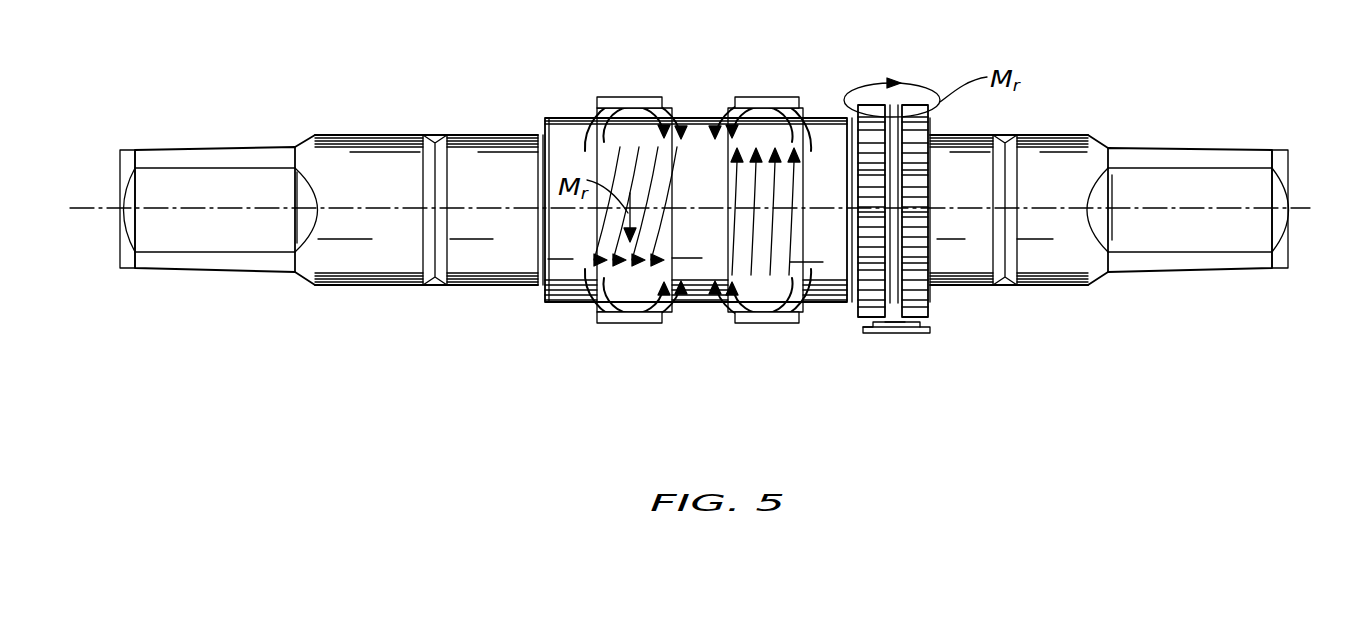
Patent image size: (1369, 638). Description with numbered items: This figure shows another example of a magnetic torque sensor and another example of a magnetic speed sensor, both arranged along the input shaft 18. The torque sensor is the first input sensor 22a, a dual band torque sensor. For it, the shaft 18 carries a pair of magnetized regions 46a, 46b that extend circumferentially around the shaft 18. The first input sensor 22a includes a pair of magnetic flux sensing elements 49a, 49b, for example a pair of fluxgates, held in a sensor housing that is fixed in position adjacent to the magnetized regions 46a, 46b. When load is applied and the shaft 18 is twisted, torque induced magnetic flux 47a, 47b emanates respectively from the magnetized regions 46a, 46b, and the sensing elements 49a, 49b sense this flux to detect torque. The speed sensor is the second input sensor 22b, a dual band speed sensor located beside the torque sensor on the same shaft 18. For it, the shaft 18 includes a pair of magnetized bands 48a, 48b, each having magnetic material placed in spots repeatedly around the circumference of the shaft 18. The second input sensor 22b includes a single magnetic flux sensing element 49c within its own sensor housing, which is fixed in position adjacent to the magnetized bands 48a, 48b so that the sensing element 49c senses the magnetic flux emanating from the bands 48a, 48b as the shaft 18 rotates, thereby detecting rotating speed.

The input shaft 18 is at (573, 265).
The first input sensor 22a is at (810, 80).
The second input sensor 22b is at (945, 80).
The magnetized region 46a is at (605, 160).
The magnetized region 46b is at (803, 270).
The torque induced magnetic flux 47a is at (598, 223).
The torque induced magnetic flux 47b is at (790, 220).
The magnetized band 48a is at (925, 333).
The magnetized band 48b is at (868, 333).
The magnetic flux sensing element 49a is at (633, 328).
The magnetic flux sensing element 49b is at (758, 328).
The magnetic flux sensing element 49c is at (893, 334).